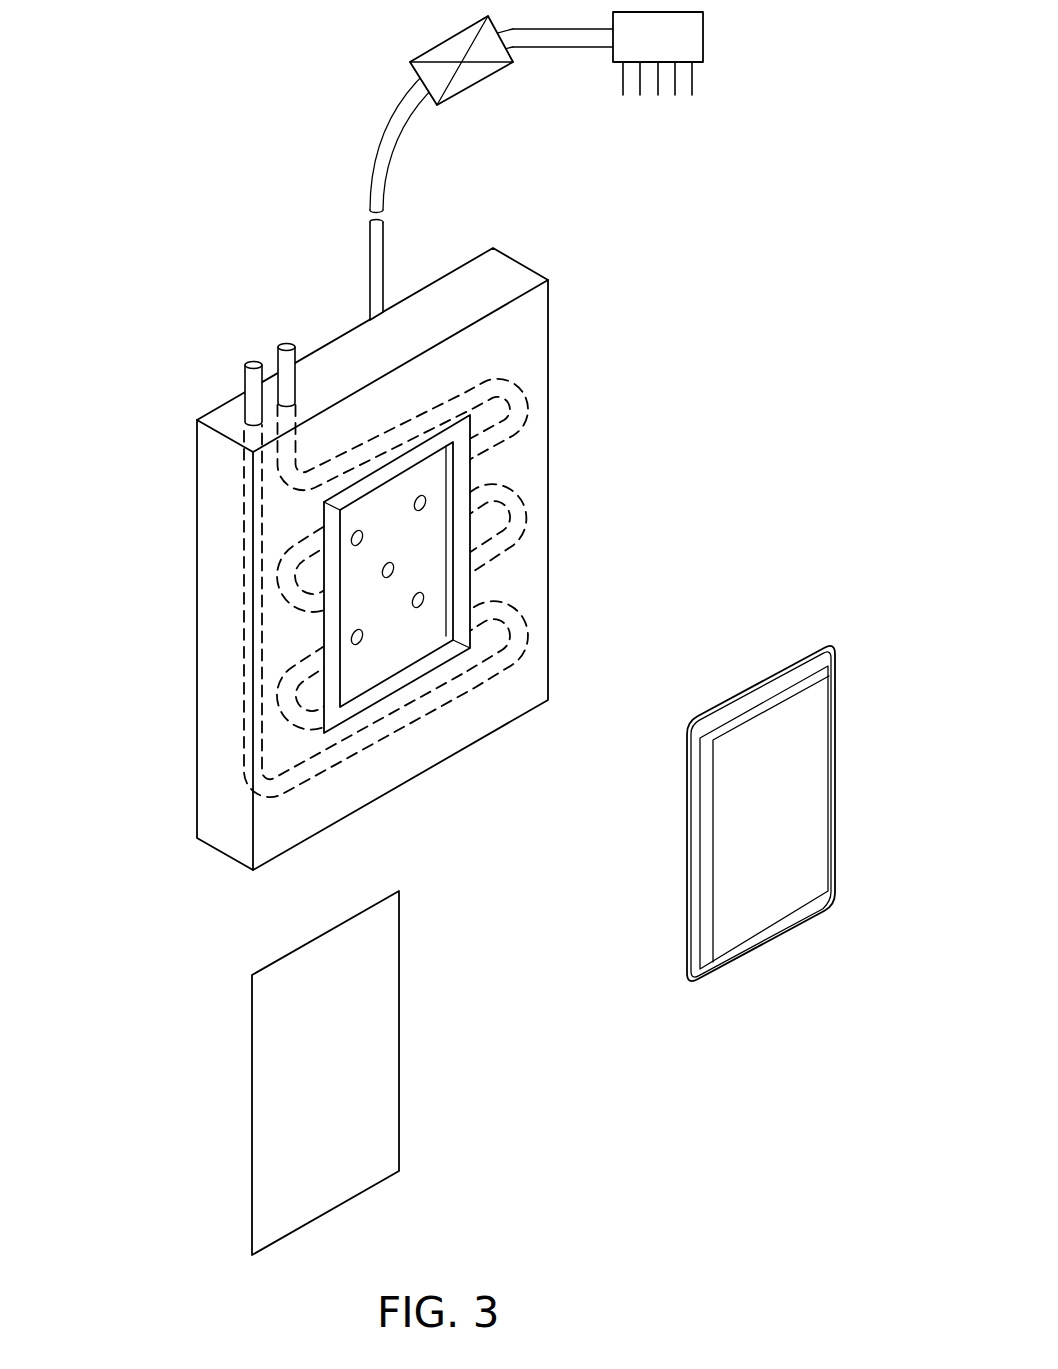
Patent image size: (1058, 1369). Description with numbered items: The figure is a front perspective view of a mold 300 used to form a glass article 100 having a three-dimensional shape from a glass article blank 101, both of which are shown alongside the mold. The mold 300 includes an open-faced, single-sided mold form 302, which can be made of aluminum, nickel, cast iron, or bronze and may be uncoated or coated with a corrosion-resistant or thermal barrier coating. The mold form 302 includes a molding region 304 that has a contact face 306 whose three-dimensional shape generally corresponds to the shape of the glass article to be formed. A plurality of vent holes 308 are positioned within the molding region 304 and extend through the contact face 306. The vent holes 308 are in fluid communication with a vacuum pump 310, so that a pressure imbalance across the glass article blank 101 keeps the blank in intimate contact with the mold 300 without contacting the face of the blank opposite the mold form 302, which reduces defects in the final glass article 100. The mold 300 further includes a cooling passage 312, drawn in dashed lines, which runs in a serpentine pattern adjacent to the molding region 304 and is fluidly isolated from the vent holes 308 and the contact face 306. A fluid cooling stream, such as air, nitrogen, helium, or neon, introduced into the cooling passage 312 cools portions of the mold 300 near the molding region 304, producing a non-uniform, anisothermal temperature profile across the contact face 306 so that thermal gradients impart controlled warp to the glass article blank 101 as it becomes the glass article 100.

The mold 300 is at (218, 219).
The mold form 302 is at (197, 470).
The molding region 304 is at (476, 471).
The contact face 306 is at (413, 632).
The vent holes 308 is at (350, 540).
The vacuum pump 310 is at (703, 37).
The cooling passage 312 is at (253, 796).
The glass article 100 is at (688, 840).
The glass article blank 101 is at (399, 1020).